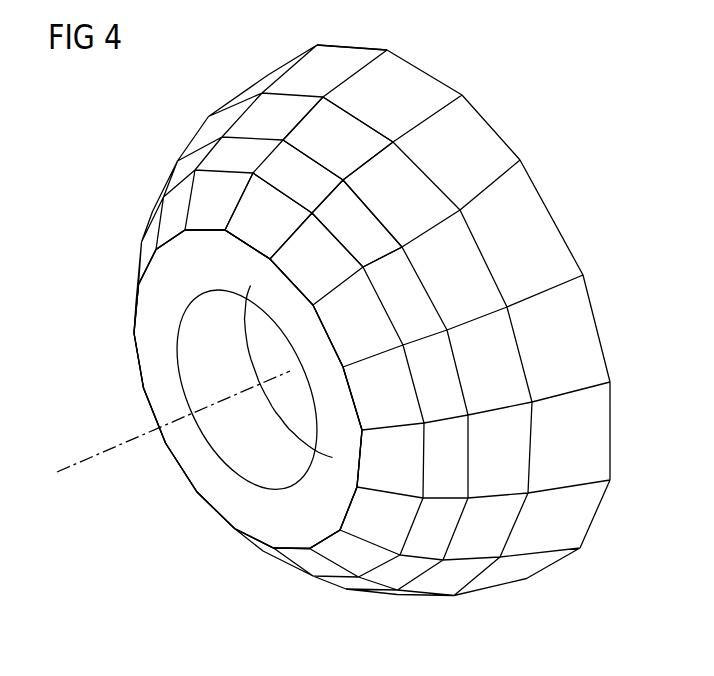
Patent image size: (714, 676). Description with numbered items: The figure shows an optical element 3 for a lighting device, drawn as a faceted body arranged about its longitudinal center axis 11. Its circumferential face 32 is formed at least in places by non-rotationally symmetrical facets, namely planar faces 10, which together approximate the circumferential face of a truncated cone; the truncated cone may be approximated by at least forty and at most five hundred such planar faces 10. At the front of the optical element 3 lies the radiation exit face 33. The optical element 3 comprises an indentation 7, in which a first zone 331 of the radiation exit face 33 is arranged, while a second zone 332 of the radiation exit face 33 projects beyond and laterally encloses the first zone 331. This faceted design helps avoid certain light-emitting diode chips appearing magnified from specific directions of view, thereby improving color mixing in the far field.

The optical element 3 is at (528, 128).
The planar faces 10 is at (347, 148).
The circumferential face 32 is at (317, 69).
The radiation exit face 33 is at (123, 327).
The second zone 332 is at (240, 280).
The first zone 331 is at (294, 370).
The indentation 7 is at (232, 432).
The longitudinal center axis 11 is at (102, 452).